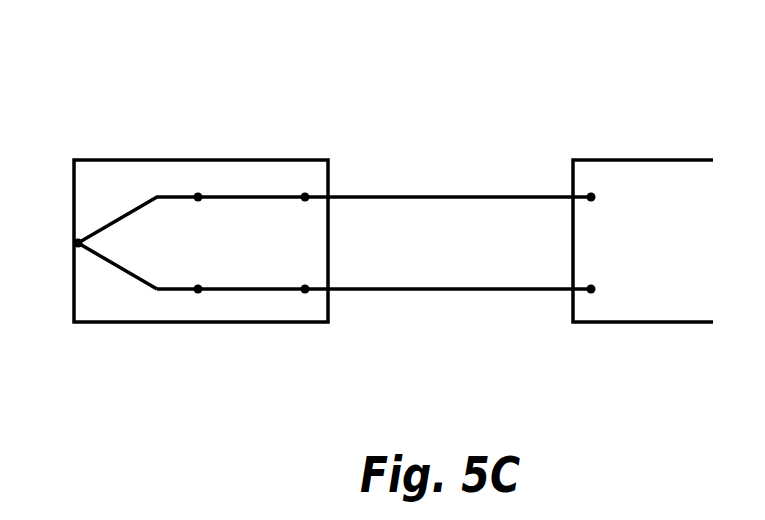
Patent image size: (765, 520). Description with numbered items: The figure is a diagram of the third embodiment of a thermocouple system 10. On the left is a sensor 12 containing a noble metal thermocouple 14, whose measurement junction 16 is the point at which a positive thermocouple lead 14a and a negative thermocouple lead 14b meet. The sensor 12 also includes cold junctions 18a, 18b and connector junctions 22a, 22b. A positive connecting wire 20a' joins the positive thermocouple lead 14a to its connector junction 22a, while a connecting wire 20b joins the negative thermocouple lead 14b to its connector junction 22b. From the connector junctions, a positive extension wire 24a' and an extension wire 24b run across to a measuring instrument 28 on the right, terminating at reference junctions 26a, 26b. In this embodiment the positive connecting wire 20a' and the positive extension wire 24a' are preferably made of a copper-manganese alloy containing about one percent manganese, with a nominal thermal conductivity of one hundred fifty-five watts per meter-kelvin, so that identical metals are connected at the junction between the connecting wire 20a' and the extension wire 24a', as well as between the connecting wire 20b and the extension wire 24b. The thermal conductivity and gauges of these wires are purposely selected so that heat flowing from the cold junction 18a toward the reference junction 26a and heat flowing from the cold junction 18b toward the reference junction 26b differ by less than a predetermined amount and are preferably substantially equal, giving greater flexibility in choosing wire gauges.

The thermocouple system 10 is at (579, 71).
The sensor 12 is at (105, 160).
The noble metal thermocouple 14 is at (110, 266).
The positive thermocouple lead 14a is at (160, 290).
The negative thermocouple lead 14b is at (160, 197).
The measurement junction 16 is at (76, 241).
The cold junction 18a is at (199, 291).
The cold junction 18b is at (199, 195).
The positive connecting wire 20a' is at (251, 328).
The connecting wire 20b is at (250, 196).
The connector junction 22a is at (306, 291).
The connector junction 22b is at (306, 195).
The positive extension wire 24a' is at (448, 328).
The extension wire 24b is at (452, 196).
The reference junction 26a is at (592, 291).
The reference junction 26b is at (592, 195).
The measuring instrument 28 is at (658, 160).